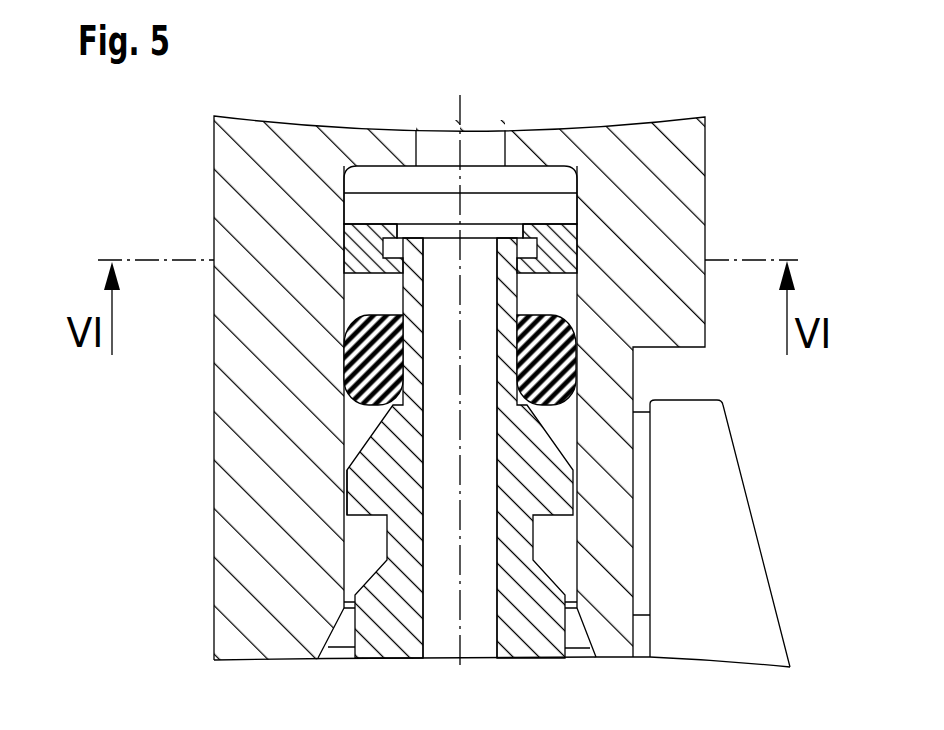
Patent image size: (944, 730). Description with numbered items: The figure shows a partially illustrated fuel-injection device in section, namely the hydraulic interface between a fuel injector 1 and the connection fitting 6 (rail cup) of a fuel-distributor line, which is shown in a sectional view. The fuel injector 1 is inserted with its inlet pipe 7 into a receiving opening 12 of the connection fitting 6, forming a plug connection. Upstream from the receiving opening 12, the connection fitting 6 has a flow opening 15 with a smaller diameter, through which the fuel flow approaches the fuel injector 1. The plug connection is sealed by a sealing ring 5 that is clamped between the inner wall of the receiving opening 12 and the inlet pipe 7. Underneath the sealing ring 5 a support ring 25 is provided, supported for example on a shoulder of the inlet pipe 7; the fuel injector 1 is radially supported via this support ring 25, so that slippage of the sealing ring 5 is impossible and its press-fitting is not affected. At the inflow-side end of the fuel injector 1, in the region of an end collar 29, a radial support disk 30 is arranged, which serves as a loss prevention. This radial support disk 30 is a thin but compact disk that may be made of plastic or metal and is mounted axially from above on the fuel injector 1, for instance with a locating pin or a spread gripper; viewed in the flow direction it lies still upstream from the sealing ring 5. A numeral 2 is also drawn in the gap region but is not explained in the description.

The fuel injector 1 is at (668, 89).
The gap 2 is at (351, 523).
The sealing ring 5 is at (350, 382).
The connection fitting 6 is at (673, 137).
The inlet pipe 7 is at (548, 478).
The receiving opening 12 is at (343, 540).
The flow opening 15 is at (435, 147).
The support ring 25 is at (357, 432).
The end collar 29 is at (400, 243).
The radial support disk 30 is at (557, 242).